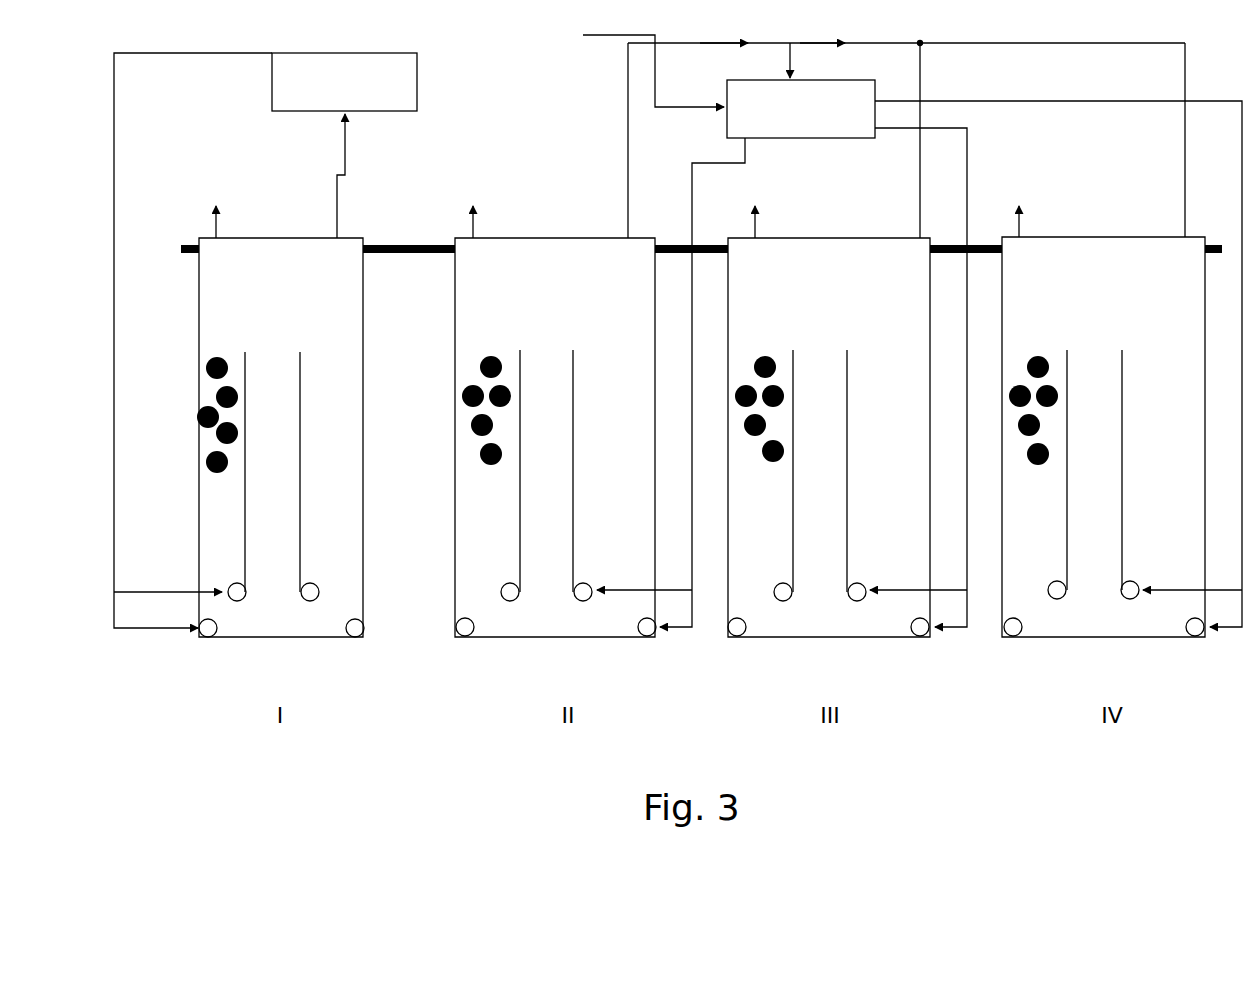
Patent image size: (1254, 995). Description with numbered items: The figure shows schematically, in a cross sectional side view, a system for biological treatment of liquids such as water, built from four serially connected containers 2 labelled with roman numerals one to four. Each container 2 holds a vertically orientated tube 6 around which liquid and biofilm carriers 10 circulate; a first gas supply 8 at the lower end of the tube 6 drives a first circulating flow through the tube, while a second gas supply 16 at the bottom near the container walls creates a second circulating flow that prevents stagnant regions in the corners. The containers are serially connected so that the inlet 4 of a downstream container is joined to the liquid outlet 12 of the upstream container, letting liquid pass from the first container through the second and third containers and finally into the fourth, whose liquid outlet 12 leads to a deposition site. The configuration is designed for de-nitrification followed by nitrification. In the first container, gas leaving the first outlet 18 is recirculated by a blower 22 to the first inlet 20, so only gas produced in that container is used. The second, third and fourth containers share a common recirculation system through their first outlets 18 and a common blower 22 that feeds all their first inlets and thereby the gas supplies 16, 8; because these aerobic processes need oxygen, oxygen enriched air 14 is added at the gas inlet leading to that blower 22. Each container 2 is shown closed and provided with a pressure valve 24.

The container 2 is at (368, 393).
The inlet 4 is at (179, 236).
The tube 6 is at (304, 492).
The first gas supply 8 is at (228, 588).
The biofilm carriers 10 is at (204, 393).
The liquid outlet 12 is at (1209, 235).
The oxygen enriched air 14 is at (807, 64).
The second gas supply 16 is at (1203, 643).
The first outlet 18 is at (390, 132).
The first inlet 20 is at (136, 588).
The blower 22 is at (573, 145).
The pressure valve 24 is at (230, 227).